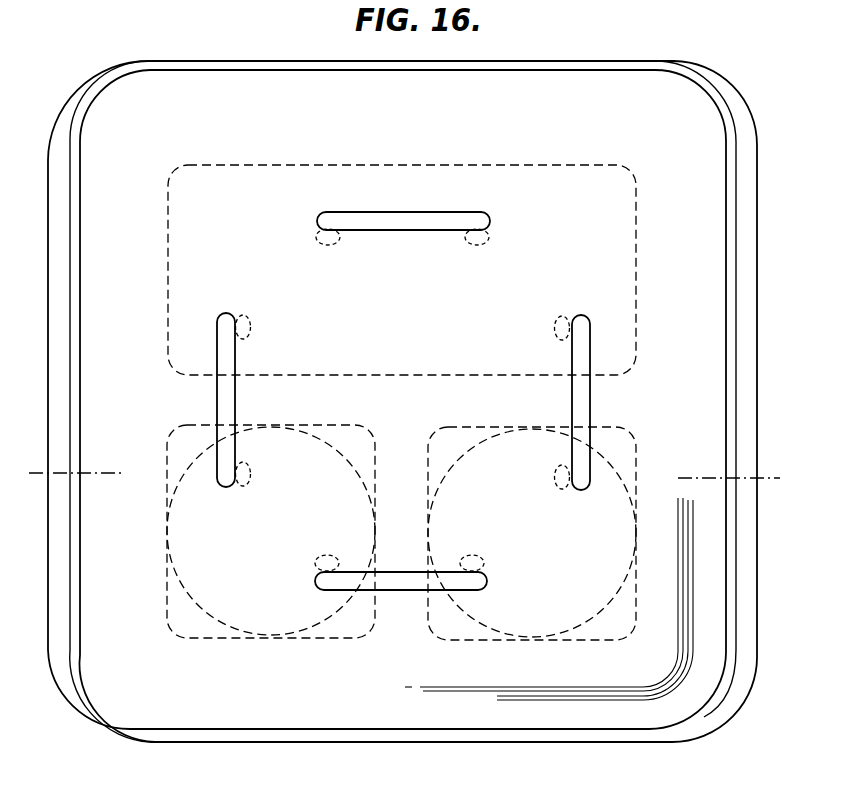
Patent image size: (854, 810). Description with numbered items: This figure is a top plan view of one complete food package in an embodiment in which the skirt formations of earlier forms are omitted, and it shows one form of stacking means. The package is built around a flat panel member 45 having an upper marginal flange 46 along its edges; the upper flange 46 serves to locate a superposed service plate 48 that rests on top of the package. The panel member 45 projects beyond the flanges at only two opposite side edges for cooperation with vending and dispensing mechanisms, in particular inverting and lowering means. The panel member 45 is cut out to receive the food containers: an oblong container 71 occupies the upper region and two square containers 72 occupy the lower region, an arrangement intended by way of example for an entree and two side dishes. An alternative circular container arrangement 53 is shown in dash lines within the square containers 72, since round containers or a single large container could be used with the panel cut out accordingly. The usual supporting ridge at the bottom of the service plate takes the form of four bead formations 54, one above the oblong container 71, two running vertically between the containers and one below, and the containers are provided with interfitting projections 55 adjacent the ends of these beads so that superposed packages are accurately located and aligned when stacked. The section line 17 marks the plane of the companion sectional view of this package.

The section line 17 is at (29, 473).
The flat panel member 45 is at (60, 668).
The upper marginal flange 46 is at (708, 718).
The service plate 48 is at (647, 706).
The circular container arrangement 53 is at (613, 468).
The bead formations 54 is at (399, 212).
The interfitting projections 55 is at (463, 239).
The oblong container 71 is at (637, 272).
The square containers 72 is at (168, 598).